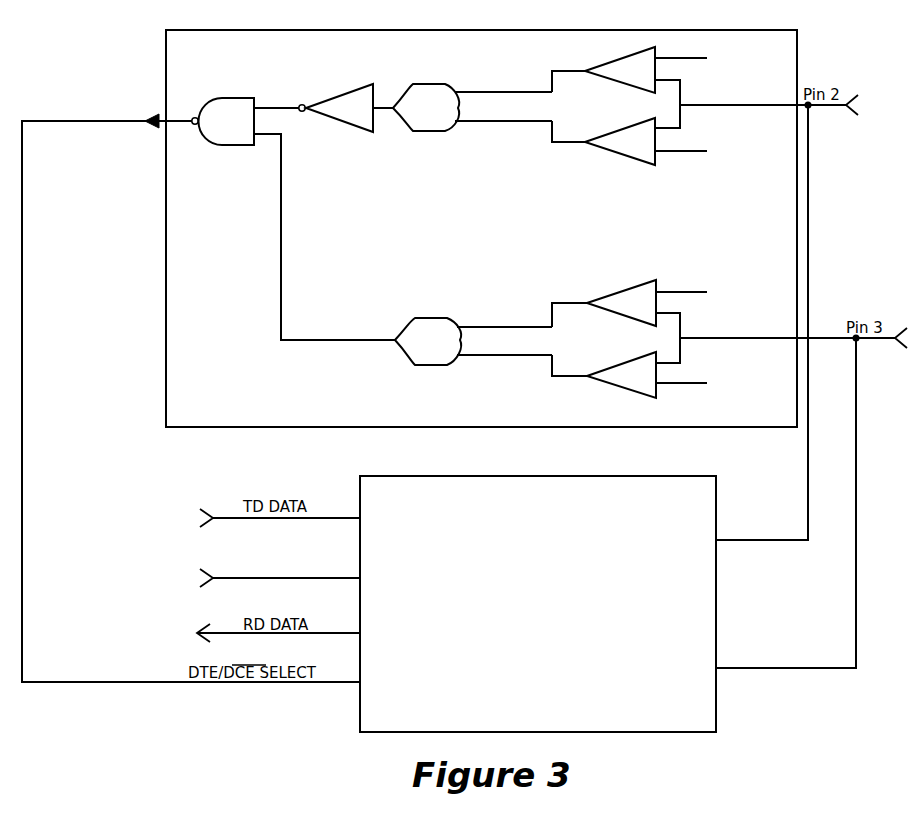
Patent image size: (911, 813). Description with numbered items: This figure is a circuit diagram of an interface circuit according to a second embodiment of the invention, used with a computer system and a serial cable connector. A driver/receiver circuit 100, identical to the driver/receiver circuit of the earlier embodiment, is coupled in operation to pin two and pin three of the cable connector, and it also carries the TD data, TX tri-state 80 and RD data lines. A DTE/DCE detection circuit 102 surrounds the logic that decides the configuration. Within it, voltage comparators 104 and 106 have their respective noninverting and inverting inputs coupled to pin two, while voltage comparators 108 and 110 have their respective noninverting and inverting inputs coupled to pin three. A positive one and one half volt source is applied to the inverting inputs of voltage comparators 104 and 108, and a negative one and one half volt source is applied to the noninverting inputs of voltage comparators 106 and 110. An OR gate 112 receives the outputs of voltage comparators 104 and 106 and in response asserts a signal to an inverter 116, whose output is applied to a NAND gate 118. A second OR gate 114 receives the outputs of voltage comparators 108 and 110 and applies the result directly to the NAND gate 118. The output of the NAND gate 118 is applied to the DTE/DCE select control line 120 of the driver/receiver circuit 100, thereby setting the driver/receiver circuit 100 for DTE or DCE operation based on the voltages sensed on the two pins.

The TX tri-state line 80 is at (292, 580).
The driver/receiver circuit 100 is at (716, 702).
The DTE/DCE detection circuit 102 is at (166, 80).
The voltage comparator 104 is at (614, 62).
The voltage comparator 106 is at (624, 155).
The voltage comparator 108 is at (630, 288).
The voltage comparator 110 is at (612, 385).
The OR gate 112 is at (432, 84).
The OR gate 114 is at (434, 318).
The inverter 116 is at (308, 103).
The NAND gate 118 is at (230, 97).
The DTE/DCE select control line 120 is at (68, 121).